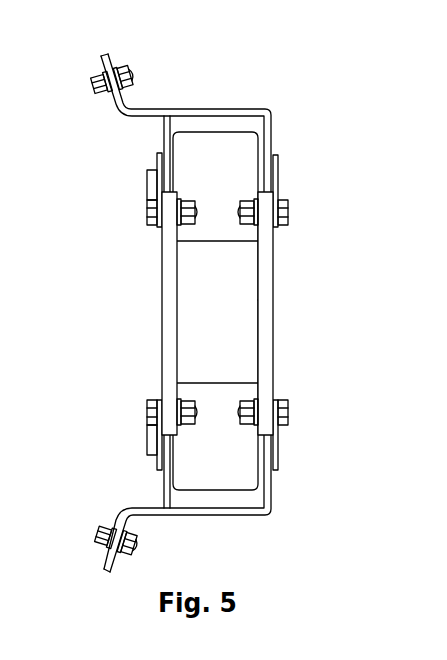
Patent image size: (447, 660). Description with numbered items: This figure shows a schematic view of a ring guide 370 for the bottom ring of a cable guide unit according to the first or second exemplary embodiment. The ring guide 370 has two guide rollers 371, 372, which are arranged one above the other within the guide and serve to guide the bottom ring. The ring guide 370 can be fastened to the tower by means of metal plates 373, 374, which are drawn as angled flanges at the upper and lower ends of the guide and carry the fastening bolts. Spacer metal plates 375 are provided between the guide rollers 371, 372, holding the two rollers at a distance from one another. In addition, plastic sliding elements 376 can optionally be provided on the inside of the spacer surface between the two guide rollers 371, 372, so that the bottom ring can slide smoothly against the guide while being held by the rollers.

The ring guide 370 is at (283, 115).
The guide roller 371 is at (247, 158).
The guide roller 372 is at (250, 462).
The metal plate 373 is at (130, 62).
The metal plate 374 is at (127, 513).
The spacer metal plate 375 is at (267, 286).
The plastic sliding element 376 is at (173, 283).